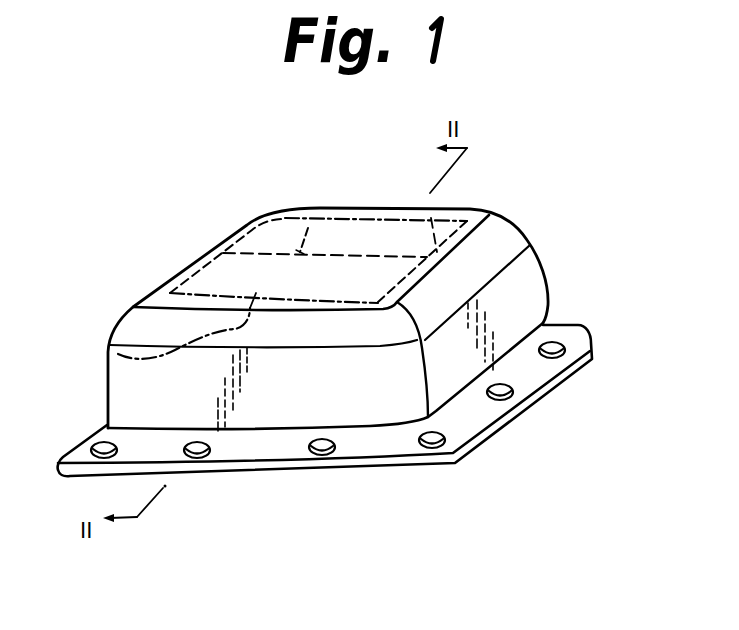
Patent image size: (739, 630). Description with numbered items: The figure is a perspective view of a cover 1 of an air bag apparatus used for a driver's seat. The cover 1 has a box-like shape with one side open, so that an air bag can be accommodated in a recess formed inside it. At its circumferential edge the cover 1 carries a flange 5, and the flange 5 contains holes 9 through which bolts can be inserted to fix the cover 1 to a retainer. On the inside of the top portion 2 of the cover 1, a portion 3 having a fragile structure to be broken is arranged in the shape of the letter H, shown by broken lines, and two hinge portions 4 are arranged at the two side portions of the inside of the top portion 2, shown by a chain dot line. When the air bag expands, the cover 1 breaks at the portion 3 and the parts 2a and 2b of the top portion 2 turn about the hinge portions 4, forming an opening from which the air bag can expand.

The cover 1 is at (179, 255).
The top portion 2 is at (480, 212).
The part 2a is at (330, 233).
The part 2b is at (199, 279).
The portion to be broken 3 is at (232, 248).
The hinge portions 4 is at (405, 206).
The flange 5 is at (571, 346).
The holes 9 is at (500, 409).